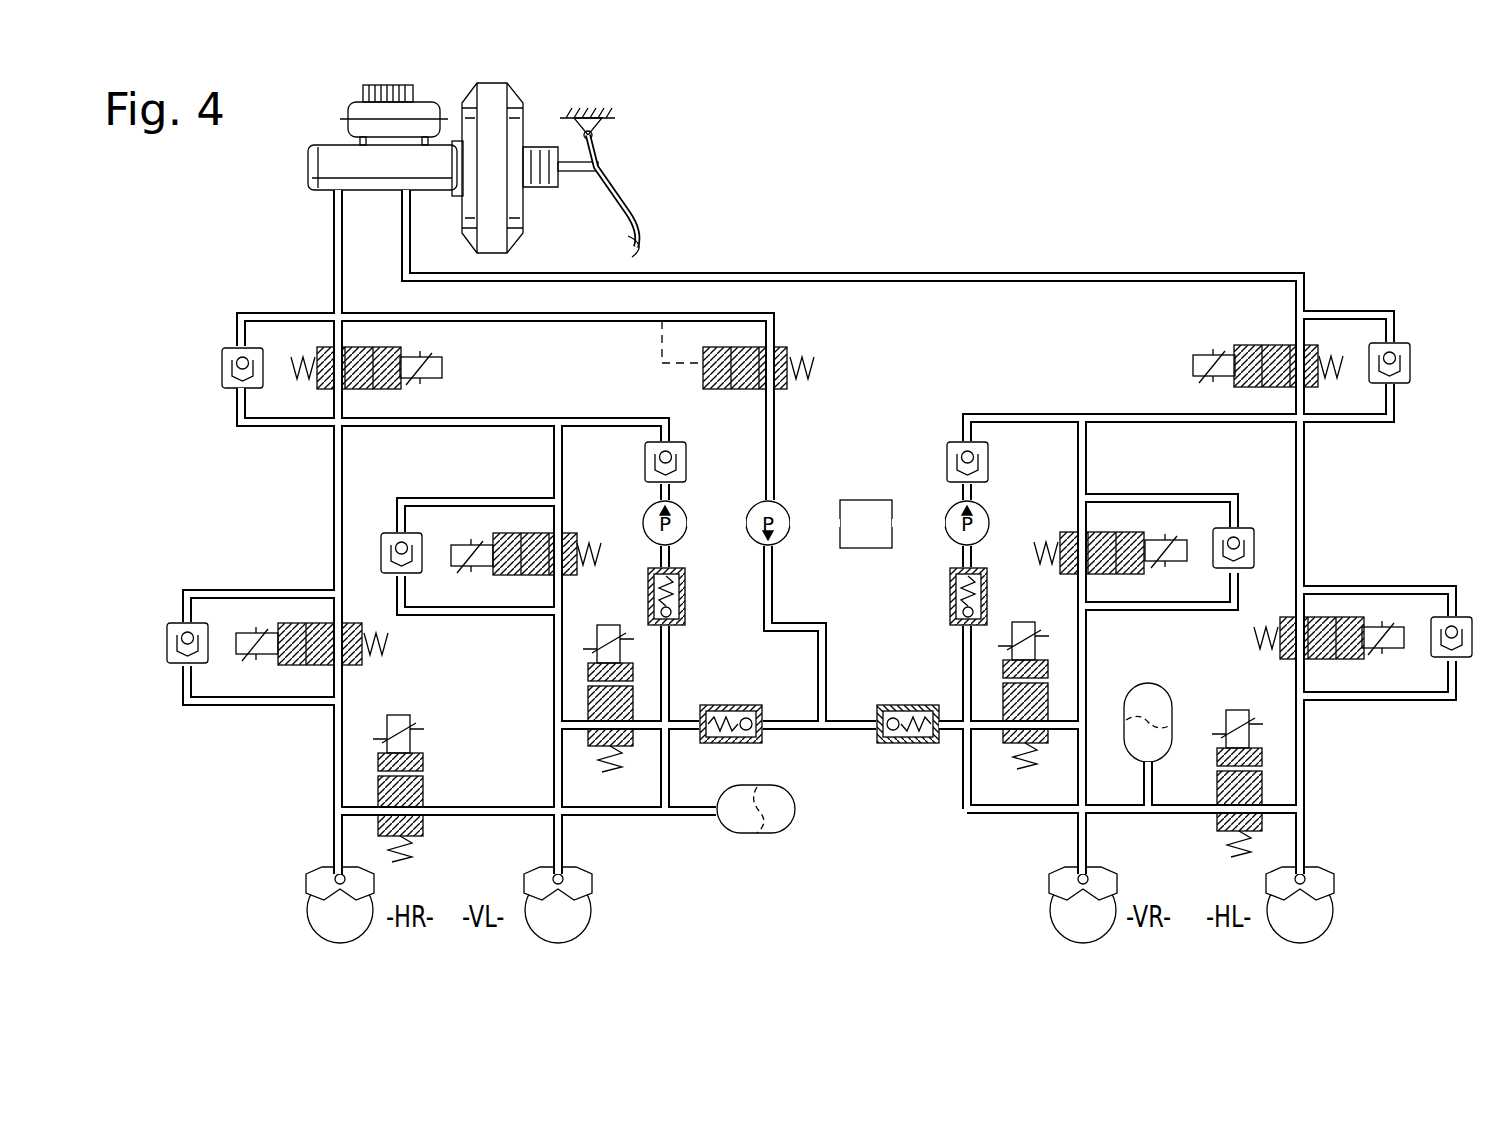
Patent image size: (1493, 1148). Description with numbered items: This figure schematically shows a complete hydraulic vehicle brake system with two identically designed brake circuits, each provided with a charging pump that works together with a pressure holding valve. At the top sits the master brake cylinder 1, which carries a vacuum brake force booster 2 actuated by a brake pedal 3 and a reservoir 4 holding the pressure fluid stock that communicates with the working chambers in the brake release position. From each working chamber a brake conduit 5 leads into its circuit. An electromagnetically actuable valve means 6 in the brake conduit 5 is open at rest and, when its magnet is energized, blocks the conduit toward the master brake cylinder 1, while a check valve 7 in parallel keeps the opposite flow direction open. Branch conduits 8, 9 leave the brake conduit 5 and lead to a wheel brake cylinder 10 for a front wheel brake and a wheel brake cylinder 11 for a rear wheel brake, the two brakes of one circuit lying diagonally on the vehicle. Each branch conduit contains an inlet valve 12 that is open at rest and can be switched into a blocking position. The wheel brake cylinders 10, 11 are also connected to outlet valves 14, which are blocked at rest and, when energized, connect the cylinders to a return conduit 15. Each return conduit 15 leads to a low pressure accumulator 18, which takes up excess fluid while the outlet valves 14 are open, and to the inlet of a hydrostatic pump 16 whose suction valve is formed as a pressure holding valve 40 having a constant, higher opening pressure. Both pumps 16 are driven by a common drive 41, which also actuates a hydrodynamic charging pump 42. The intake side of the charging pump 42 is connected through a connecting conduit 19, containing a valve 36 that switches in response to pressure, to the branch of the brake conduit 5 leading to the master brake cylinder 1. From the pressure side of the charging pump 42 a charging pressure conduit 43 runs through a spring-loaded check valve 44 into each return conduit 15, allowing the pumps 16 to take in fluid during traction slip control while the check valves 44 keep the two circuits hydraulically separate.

The master brake cylinder 1 is at (325, 163).
The vacuum brake force booster 2 is at (500, 228).
The brake pedal 3 is at (612, 215).
The reservoir 4 is at (355, 112).
The brake conduit 5 is at (330, 243).
The electromagnetically actuable valve means 6 is at (393, 350).
The check valve 7 is at (222, 362).
The branch conduit 8 is at (333, 466).
The branch conduit 9 is at (553, 462).
The wheel brake cylinder 10 is at (578, 880).
The wheel brake cylinder 11 is at (333, 880).
The inlet valve 12 is at (562, 533).
The outlet valve 14 is at (420, 786).
The return conduit 15 is at (653, 817).
The hydrostatic pump 16 is at (683, 505).
The low pressure accumulator 18 is at (757, 833).
The connecting conduit 19 is at (578, 315).
The valve switching in response to pressure 36 is at (787, 347).
The pressure holding valve 40 is at (687, 590).
The common drive 41 is at (866, 500).
The hydrodynamic charging pump 42 is at (788, 507).
The charging pressure conduit 43 is at (775, 614).
The spring-loaded check valve 44 is at (722, 705).